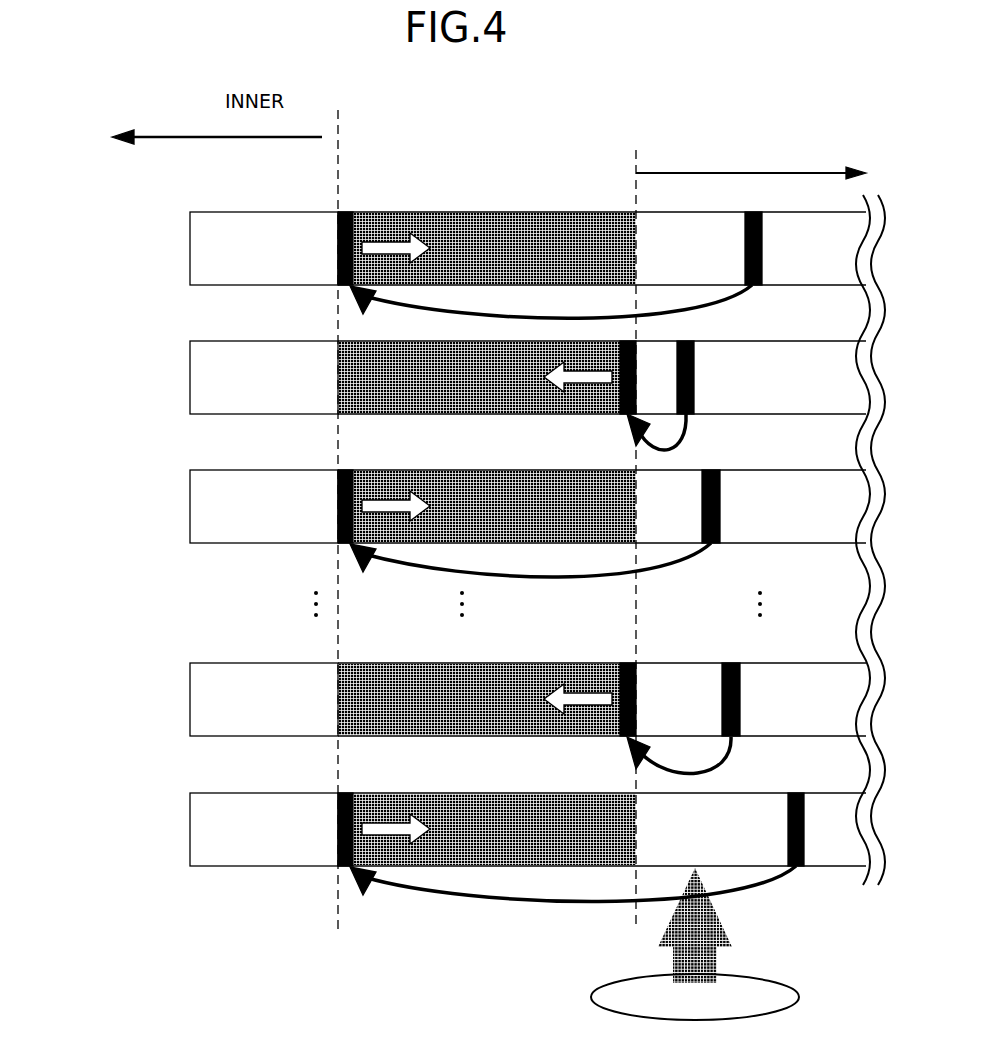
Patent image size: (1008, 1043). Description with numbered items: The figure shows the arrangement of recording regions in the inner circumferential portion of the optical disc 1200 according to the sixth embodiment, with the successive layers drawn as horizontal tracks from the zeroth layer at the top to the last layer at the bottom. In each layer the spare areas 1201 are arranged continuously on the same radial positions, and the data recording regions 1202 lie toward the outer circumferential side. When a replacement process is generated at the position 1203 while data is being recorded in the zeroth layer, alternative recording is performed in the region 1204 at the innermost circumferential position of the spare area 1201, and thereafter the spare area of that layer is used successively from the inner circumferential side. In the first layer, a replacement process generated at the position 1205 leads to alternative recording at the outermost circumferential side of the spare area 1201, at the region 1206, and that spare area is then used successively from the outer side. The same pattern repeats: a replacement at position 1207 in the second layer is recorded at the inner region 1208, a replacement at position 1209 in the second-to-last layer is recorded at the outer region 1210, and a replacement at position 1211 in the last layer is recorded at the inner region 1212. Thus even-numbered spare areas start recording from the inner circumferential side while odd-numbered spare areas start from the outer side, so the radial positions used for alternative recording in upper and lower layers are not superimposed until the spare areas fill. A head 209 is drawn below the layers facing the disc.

The optical disc 1200 is at (118, 212).
The spare areas 1201 is at (636, 210).
The data recording regions 1202 is at (751, 162).
The replacement process generation position in layer L_0 1203 is at (752, 288).
The alternative recording region in layer L_0 1204 is at (348, 288).
The write position on track L_1 1205 is at (688, 416).
The inner zone end position on track L_1 1206 is at (630, 417).
The write position on track L_2 1207 is at (712, 545).
The inner zone start position on track L_2 1208 is at (348, 546).
The write position on track L_(X-1) 1209 is at (728, 663).
The inner zone end position on track L_(X-1) 1210 is at (622, 662).
The write position on track L_X 1211 is at (796, 869).
The inner zone start position on track L_X 1212 is at (348, 870).
The head 209 is at (805, 965).